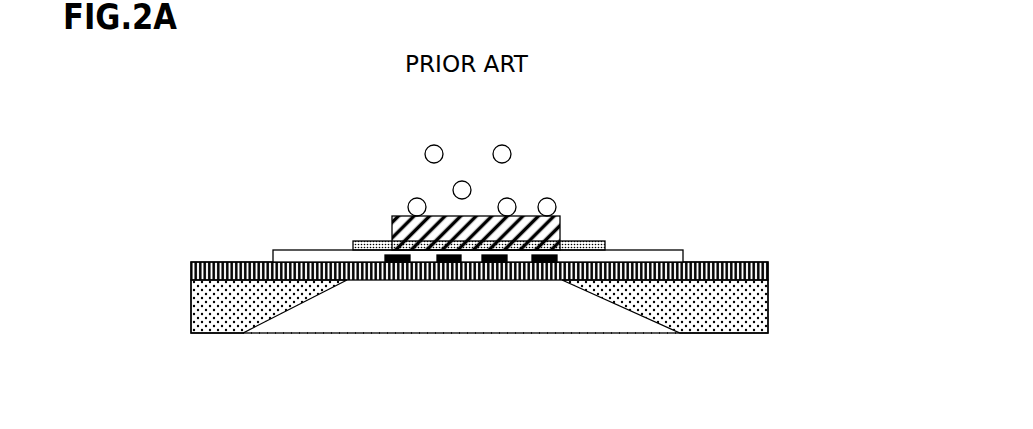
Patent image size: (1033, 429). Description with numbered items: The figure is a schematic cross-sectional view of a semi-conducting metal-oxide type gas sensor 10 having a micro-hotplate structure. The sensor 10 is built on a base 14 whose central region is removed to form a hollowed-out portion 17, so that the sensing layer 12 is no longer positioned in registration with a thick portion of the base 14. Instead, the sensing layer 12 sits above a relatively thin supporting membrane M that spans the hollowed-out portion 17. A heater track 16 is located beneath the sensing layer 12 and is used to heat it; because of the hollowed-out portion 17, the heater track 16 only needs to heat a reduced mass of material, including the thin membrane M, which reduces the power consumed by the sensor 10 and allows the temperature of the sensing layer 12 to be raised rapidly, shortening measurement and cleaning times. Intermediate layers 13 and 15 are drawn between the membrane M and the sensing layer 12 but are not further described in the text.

The semi-conducting metal-oxide type gas sensor 10 is at (712, 92).
The sensing layer 12 is at (397, 215).
The insulating layer 13 is at (668, 250).
The base 14 is at (752, 287).
The adhesive / bonding layer 15 is at (353, 241).
The heater track 16 is at (552, 265).
The hollowed-out portion 17 is at (435, 305).
The supporting membrane M is at (718, 262).